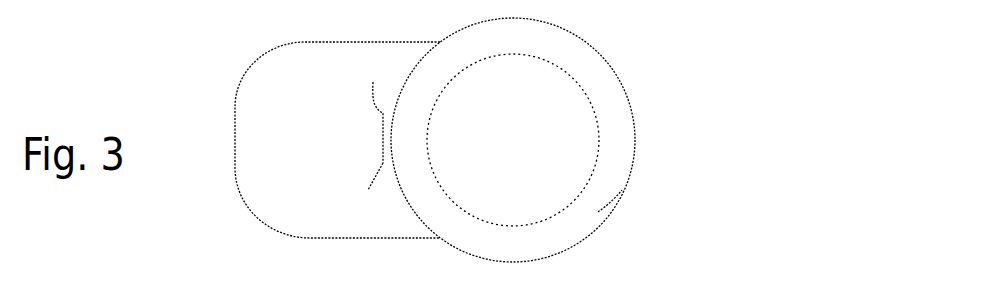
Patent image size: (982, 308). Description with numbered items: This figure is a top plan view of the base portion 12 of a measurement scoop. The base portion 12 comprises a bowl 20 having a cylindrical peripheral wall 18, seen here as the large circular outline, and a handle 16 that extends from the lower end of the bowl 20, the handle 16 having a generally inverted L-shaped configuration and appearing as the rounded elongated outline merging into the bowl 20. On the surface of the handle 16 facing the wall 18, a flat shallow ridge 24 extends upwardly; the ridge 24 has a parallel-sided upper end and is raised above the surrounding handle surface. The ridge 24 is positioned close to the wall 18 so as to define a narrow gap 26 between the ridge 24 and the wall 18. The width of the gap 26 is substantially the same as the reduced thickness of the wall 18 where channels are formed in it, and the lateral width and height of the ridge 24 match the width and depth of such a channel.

The base portion 12 is at (598, 93).
The handle 16 is at (270, 140).
The cylindrical peripheral wall 18 is at (612, 210).
The bowl 20 is at (527, 152).
The ridge 24 is at (373, 140).
The gap 26 is at (384, 152).